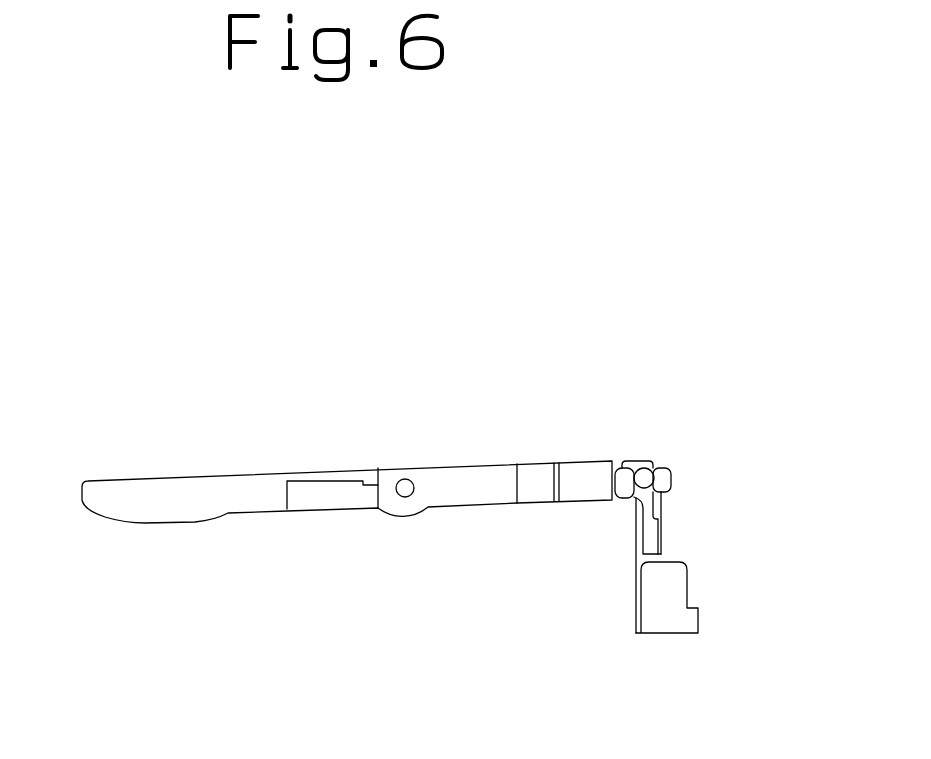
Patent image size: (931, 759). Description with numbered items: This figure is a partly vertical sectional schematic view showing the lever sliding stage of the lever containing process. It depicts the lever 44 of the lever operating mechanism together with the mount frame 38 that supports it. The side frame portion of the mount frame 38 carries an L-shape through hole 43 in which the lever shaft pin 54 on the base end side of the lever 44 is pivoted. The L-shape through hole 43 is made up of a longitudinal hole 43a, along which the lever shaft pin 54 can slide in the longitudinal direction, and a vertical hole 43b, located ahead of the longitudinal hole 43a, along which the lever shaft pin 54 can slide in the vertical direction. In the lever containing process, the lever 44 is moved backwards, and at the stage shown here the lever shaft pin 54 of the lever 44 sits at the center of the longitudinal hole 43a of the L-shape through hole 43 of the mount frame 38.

The lever 44 is at (152, 490).
The L-shape through hole 43 is at (608, 462).
The longitudinal hole 43a is at (658, 481).
The vertical hole 43b is at (623, 493).
The lever shaft pin 54 is at (644, 479).
The mount frame 38 is at (673, 597).